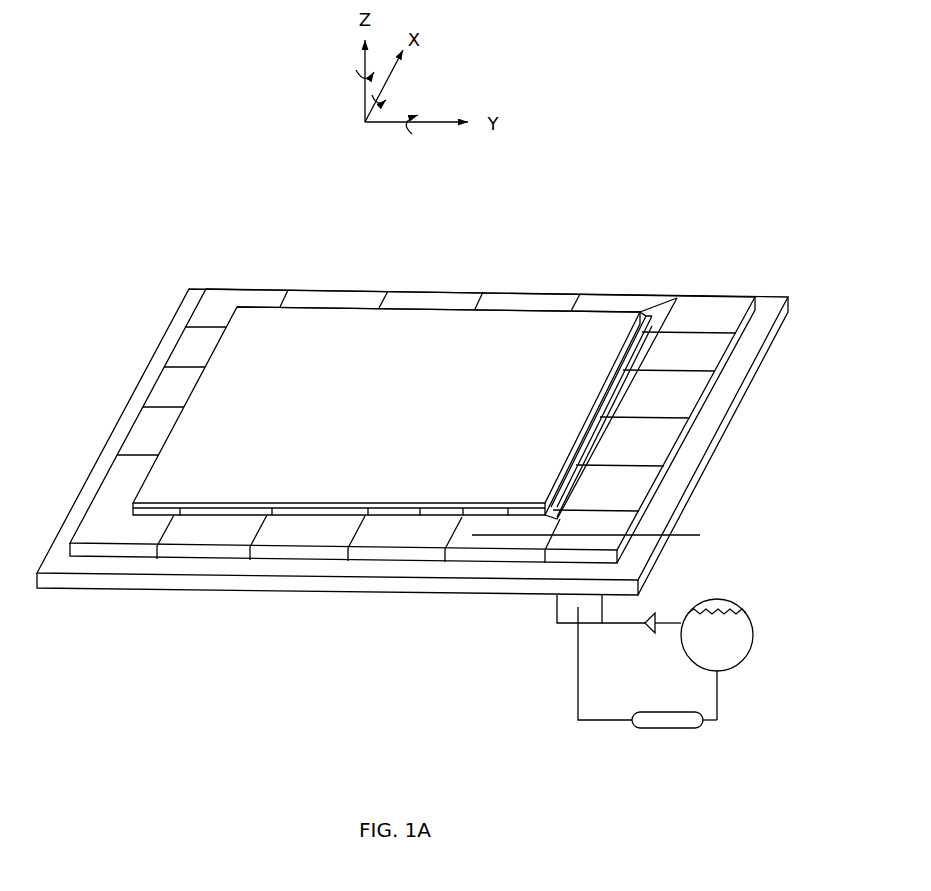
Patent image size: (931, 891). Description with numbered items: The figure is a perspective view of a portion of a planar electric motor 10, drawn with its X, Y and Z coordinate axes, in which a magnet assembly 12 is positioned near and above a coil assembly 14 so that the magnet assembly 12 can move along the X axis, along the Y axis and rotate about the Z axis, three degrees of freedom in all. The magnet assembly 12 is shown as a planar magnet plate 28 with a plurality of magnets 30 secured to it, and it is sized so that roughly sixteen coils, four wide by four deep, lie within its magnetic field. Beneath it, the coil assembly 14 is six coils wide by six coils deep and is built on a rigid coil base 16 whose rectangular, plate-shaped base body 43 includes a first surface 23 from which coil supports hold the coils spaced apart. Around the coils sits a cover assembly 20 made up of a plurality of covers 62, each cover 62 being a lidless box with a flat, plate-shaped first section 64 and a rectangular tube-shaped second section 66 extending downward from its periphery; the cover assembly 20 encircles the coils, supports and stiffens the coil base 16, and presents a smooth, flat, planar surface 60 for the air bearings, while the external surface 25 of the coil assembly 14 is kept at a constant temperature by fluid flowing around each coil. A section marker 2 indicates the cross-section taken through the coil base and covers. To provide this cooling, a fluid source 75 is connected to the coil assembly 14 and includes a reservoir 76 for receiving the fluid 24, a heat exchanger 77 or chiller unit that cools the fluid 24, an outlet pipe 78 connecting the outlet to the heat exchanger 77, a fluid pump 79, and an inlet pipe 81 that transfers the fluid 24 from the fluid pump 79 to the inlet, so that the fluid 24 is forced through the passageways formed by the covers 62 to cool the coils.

The electric motor 10 is at (583, 260).
The magnet assembly 12 is at (322, 338).
The coil assembly 14 is at (742, 296).
The coil base 16 is at (730, 390).
The cover assembly 20 is at (727, 355).
The first surface 23 is at (707, 428).
The external surface 25 is at (697, 307).
The magnet plate 28 is at (440, 340).
The magnets 30 is at (648, 310).
The base body 43 is at (700, 481).
The surface 60 is at (118, 497).
The covers 62 is at (500, 540).
The first section 64 is at (518, 545).
The second section 66 is at (465, 550).
The section line 2- 2 is at (472, 522).
The fluid 24 is at (715, 636).
The fluid source 75 is at (748, 610).
The reservoir 76 is at (741, 662).
The heat exchanger 77 is at (673, 721).
The outlet pipe 78 is at (597, 721).
The fluid pump 79 is at (646, 614).
The inlet pipe 81 is at (613, 624).